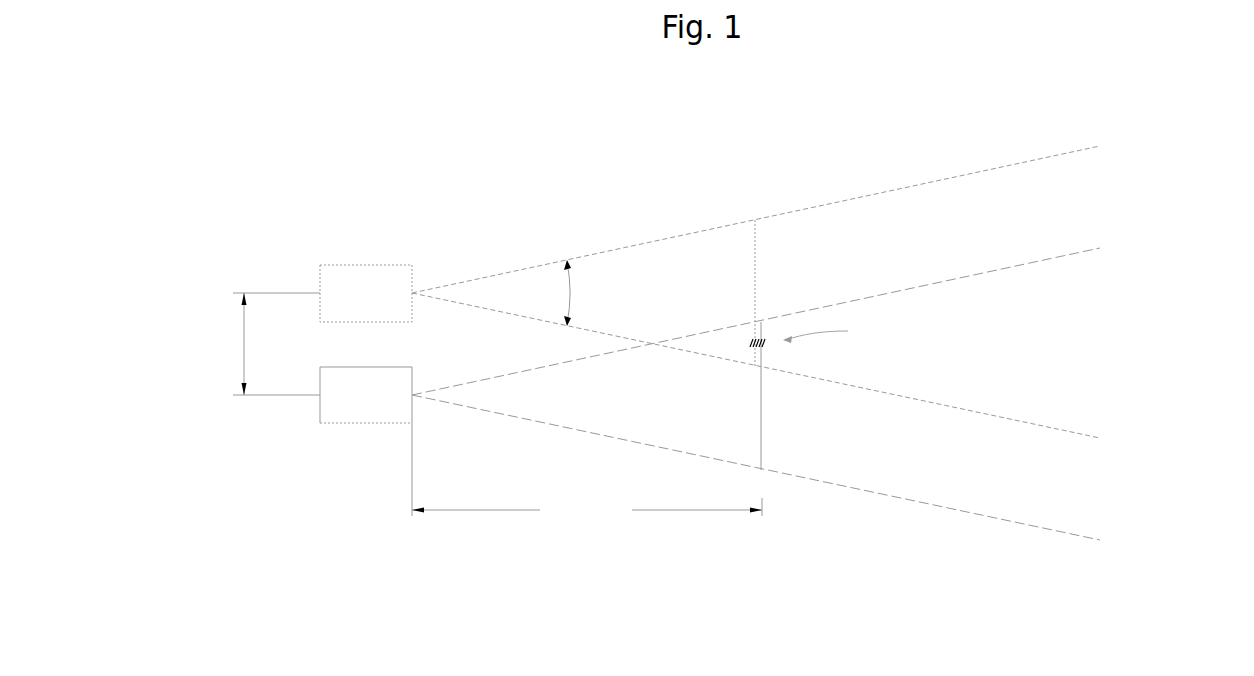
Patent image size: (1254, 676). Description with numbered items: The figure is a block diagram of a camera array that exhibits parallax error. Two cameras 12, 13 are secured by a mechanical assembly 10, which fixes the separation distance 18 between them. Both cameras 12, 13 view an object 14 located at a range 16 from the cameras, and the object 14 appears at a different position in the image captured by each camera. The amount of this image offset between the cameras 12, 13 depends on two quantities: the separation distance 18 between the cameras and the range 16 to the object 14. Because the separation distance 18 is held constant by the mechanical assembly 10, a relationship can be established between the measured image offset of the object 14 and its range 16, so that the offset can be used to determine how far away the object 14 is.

The mechanical assembly 10 is at (364, 240).
The camera 12 is at (369, 302).
The camera 13 is at (369, 412).
The object 14 is at (782, 355).
The range 16 is at (587, 500).
The separation distance 18 is at (244, 353).